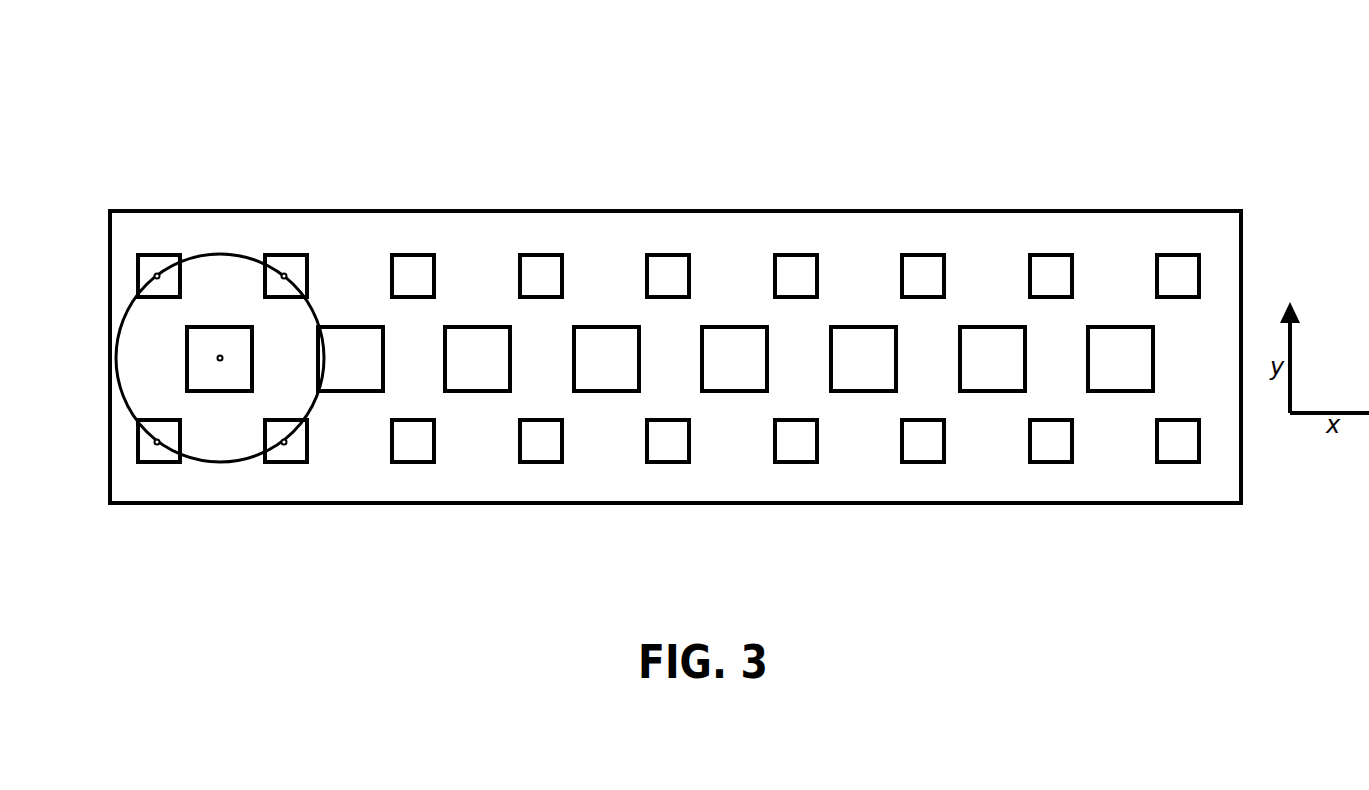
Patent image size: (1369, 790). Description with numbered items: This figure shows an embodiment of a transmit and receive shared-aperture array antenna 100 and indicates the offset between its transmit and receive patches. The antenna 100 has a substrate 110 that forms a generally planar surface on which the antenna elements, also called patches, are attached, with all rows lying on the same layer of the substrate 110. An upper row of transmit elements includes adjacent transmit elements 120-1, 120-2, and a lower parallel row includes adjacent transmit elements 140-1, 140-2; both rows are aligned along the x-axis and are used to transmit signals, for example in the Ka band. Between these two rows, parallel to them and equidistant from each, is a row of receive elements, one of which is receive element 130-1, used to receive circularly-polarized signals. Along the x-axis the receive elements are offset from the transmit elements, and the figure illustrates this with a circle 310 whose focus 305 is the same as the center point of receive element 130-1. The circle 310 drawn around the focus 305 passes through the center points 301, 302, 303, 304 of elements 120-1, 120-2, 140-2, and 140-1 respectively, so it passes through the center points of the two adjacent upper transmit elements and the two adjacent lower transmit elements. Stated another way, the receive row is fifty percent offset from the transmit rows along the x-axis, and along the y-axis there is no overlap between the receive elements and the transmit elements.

The transmit and receive shared-aperture array antenna 100 is at (83, 124).
The substrate 110 is at (148, 210).
The transmit element 120-1 is at (138, 283).
The transmit element 120-2 is at (354, 279).
The receive element 130-1 is at (186, 363).
The transmit element 140-1 is at (138, 452).
The transmit element 140-2 is at (354, 451).
The center point 301 is at (157, 275).
The center point 302 is at (284, 275).
The center point 303 is at (284, 441).
The center point 304 is at (157, 441).
The focus 305 is at (220, 357).
The circle 310 is at (219, 254).